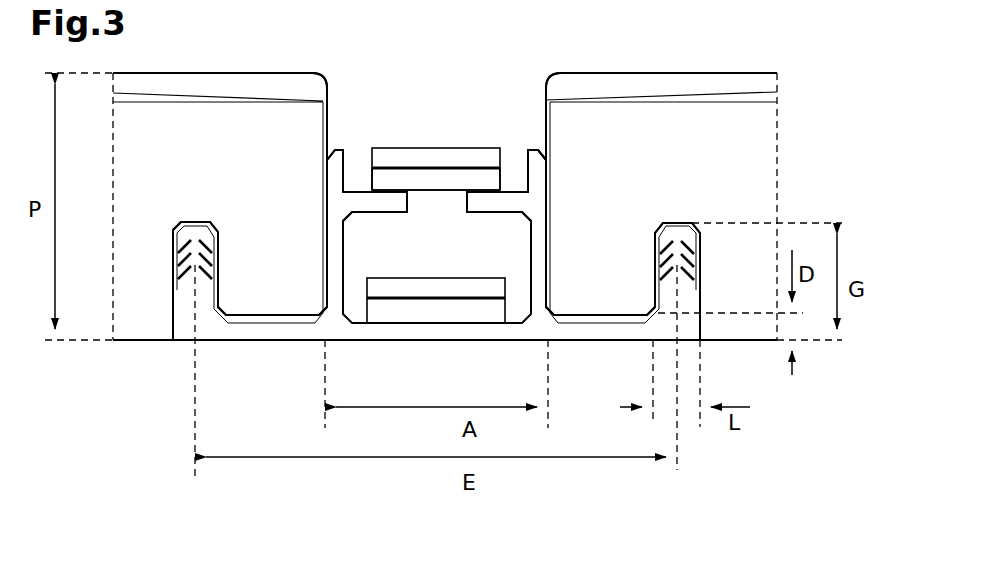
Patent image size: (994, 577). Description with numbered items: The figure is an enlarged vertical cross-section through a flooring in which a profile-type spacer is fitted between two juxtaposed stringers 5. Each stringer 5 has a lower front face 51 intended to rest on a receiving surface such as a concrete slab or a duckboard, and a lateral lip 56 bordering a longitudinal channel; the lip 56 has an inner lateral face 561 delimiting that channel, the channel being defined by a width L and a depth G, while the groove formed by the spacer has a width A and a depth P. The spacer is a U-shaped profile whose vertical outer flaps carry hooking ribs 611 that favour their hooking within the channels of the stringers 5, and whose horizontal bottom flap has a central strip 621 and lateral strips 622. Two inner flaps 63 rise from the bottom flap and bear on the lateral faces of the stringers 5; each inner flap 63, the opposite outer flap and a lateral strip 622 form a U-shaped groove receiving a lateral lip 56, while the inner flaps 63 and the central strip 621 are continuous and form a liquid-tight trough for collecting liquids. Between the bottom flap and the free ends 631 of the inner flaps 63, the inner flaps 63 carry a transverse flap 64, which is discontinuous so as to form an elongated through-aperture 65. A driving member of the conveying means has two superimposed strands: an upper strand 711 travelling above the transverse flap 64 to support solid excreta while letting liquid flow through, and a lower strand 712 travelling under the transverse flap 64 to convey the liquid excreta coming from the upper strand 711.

The stringer 5 is at (713, 72).
The inner flap 63 is at (547, 158).
The free end of inner flap 631 is at (530, 143).
The elongated through-aperture 65 is at (413, 216).
The transverse flap 64 is at (505, 216).
The upper strand 711 is at (452, 179).
The lower strand 712 is at (410, 324).
The hooking rib 611 is at (174, 257).
The inner lateral face of lateral lip 561 is at (666, 288).
The lateral lip 56 is at (290, 322).
The central strip of bottom flap 621 is at (463, 347).
The lateral strip of bottom flap 622 is at (570, 337).
The lower front face 51 is at (133, 346).